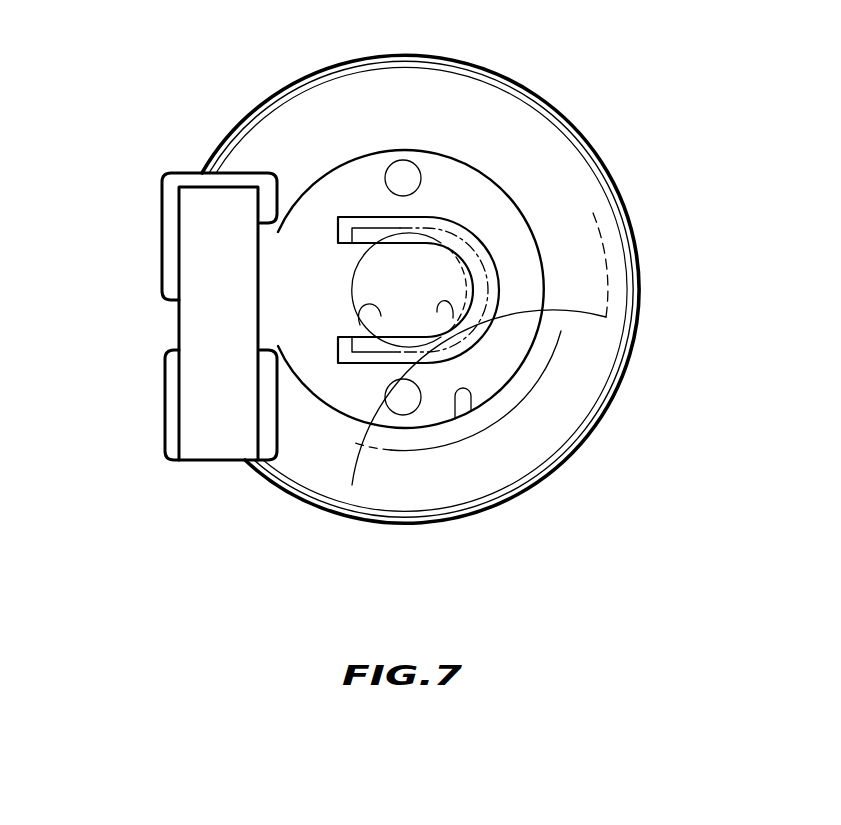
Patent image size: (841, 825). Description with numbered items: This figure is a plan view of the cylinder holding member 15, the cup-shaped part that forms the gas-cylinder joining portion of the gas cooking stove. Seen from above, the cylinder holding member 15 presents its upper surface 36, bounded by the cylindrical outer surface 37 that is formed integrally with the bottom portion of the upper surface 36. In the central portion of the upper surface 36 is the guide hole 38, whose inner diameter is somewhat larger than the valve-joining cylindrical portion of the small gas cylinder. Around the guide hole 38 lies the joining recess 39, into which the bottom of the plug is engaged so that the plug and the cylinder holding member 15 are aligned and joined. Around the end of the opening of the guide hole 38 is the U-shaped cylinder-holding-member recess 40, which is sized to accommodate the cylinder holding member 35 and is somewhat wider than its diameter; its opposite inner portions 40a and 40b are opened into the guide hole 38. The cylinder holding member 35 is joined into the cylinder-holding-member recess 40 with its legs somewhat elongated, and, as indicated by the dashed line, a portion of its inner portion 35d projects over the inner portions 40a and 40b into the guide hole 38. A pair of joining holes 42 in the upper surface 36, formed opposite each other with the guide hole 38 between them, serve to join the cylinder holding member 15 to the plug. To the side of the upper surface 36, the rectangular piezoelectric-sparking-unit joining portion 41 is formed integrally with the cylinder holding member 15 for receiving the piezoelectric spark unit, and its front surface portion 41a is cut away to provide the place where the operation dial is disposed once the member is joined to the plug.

The cylinder holding member 15 is at (662, 55).
The cylinder holding member 35 is at (480, 263).
The inner portion 35d is at (452, 318).
The upper surface 36 is at (567, 202).
The cylindrical outer surface 37 is at (589, 136).
The guide hole 38 is at (373, 307).
The joining recess 39 is at (466, 396).
The cylinder-holding-member recess 40 is at (458, 323).
The inner portion 40a is at (400, 338).
The inner portion 40b is at (395, 238).
The piezoelectric-sparking-unit joining portion 41 is at (167, 341).
The front surface portion 41a is at (212, 462).
The joining holes 42 is at (406, 176).